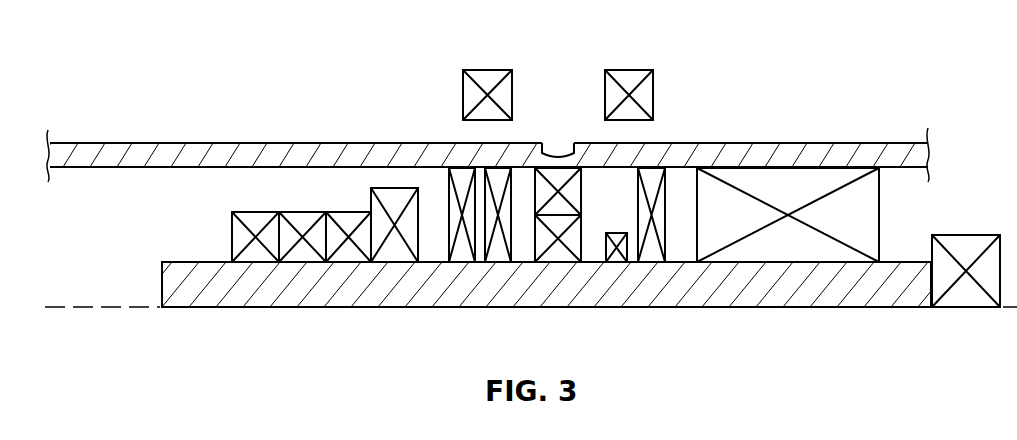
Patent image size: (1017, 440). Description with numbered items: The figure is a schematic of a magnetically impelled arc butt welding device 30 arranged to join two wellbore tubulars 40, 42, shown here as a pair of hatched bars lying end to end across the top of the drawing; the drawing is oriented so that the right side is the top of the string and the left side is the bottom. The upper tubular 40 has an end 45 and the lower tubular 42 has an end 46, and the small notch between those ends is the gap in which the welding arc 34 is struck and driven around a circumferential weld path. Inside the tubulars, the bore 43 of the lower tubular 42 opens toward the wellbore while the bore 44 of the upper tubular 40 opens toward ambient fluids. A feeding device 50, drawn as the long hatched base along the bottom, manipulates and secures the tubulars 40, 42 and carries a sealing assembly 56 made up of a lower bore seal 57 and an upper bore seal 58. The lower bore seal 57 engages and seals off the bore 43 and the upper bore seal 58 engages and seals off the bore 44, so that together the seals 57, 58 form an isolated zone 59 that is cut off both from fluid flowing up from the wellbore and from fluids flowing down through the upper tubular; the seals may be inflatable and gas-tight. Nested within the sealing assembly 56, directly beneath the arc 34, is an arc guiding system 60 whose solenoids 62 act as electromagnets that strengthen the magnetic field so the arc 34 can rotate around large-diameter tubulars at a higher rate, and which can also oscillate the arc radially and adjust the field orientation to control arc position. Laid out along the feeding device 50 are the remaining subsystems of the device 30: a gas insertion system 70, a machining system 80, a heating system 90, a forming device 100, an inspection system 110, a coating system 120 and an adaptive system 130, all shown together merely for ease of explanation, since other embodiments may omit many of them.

The MIAB welding device 30 is at (793, 58).
The arc 34 is at (558, 153).
The tubular 40 is at (870, 150).
The tubular 42 is at (107, 152).
The bore 43 is at (128, 221).
The bore 44 is at (948, 221).
The end 45 is at (597, 153).
The end 46 is at (507, 152).
The feeding device 50 is at (173, 282).
The sealing assembly 56 is at (556, 221).
The lower bore seal 57 is at (452, 221).
The upper bore seal 58 is at (653, 178).
The isolated zone 59 is at (625, 209).
The arc guiding system 60 is at (463, 248).
The solenoids 62 is at (488, 82).
The gas insertion system 70 is at (785, 240).
The machining system 80 is at (392, 200).
The heating system 90 is at (348, 257).
The forming device 100 is at (572, 197).
The inspection system 110 is at (297, 257).
The coating system 120 is at (249, 257).
The adaptive system 130 is at (965, 287).